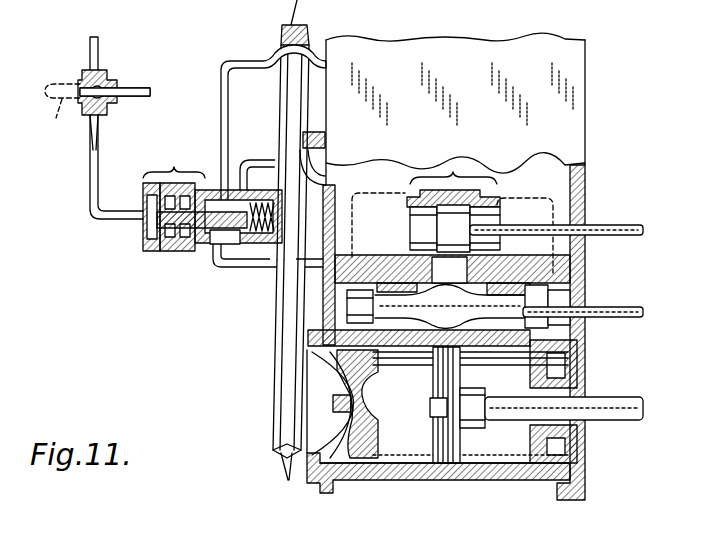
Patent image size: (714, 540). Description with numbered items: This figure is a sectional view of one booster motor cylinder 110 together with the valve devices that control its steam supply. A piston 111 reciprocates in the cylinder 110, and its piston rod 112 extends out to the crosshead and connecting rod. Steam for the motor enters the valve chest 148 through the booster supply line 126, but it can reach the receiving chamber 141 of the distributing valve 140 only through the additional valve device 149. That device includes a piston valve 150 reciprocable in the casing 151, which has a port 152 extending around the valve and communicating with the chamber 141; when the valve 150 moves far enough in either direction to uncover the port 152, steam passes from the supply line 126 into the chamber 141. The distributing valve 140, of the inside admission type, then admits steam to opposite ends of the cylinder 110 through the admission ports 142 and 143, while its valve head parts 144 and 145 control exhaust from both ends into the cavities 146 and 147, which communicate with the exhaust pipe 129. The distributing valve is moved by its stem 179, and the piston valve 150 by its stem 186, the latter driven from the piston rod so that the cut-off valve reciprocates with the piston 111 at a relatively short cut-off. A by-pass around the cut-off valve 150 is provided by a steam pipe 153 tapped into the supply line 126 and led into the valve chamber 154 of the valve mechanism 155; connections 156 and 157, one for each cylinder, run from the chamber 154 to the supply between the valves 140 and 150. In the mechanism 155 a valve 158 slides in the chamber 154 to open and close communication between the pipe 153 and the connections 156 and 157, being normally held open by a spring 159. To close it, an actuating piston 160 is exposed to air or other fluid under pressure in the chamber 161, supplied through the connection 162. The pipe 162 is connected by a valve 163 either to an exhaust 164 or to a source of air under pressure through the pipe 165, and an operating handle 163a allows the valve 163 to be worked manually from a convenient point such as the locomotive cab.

The cylinder 110 is at (410, 468).
The piston 111 is at (465, 448).
The piston rod 112 is at (627, 421).
The booster supply line 126 is at (286, 100).
The exhaust pipe 129 is at (283, 395).
The distributing valve 140 is at (452, 238).
The chamber 141 is at (424, 352).
The admission port 142 is at (330, 372).
The admission port 143 is at (558, 346).
The valve head part 144 is at (348, 338).
The valve head part 145 is at (572, 322).
The cavity 146 is at (348, 305).
The cavity 147 is at (562, 300).
The valve chest 148 is at (582, 185).
The additional valve device 149 is at (453, 169).
The piston valve 150 is at (410, 228).
The casing 151 is at (407, 210).
The port 152 is at (449, 270).
The steam pipe 153 is at (250, 161).
The valve chamber 154 is at (228, 248).
The valve mechanism 155 is at (174, 161).
The connection 156 is at (210, 262).
The connection 157 is at (250, 62).
The valve 158 is at (215, 245).
The spring 159 is at (262, 243).
The actuating piston 160 is at (172, 244).
The chamber 161 is at (147, 229).
The connection 162 is at (90, 163).
The valve 163 is at (89, 80).
The operating handle 163a is at (88, 126).
The exhaust 164 is at (134, 88).
The pipe 165 is at (99, 60).
The stem 179 is at (644, 307).
The stem 186 is at (600, 225).